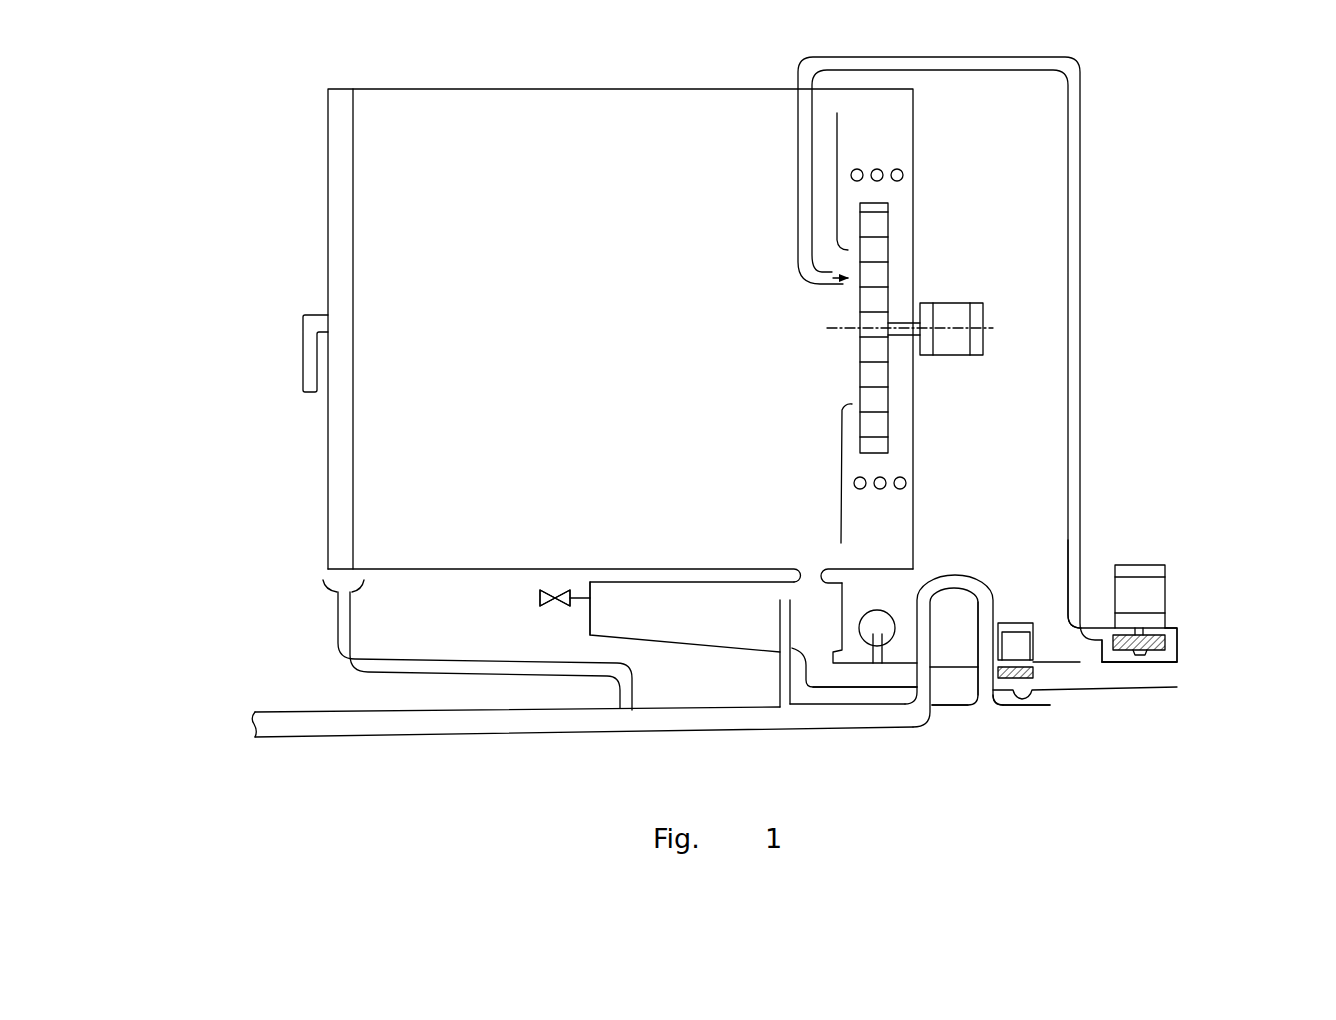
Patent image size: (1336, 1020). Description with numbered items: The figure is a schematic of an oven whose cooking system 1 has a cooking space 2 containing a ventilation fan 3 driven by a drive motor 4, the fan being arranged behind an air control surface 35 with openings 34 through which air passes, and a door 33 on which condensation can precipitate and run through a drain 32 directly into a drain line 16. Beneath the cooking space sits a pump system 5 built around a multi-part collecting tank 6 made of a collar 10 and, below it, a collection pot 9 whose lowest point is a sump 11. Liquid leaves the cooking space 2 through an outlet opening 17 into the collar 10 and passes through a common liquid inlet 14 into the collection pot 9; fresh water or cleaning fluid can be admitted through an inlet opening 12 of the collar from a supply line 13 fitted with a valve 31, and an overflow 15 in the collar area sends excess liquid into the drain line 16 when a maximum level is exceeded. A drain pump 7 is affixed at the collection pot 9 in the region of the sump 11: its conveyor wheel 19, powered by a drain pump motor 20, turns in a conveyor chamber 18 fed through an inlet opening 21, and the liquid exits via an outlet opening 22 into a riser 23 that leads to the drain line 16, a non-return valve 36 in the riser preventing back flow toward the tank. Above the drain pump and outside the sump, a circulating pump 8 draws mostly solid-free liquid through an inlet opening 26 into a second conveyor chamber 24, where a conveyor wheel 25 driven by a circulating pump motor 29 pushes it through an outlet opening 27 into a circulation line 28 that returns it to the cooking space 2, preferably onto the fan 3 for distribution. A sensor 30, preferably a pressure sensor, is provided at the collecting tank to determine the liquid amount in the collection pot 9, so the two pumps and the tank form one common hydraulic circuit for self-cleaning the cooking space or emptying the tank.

The cooking system 1 is at (230, 333).
The cooking space 2 is at (640, 272).
The ventilation fan 3 is at (866, 373).
The drive motor 4 is at (950, 303).
The pump system 5 is at (1252, 605).
The collecting tank 6 is at (826, 691).
The drain pump 7 is at (1014, 592).
The circulating pump 8 is at (1157, 505).
The collection pot 9 is at (1102, 690).
The collar 10 is at (722, 630).
The sump 11 is at (968, 708).
The inlet opening 12 is at (602, 596).
The supply line 13 is at (578, 605).
The liquid inlet 14 is at (815, 656).
The overflow 15 is at (768, 601).
The drain line 16 is at (542, 722).
The outlet opening 17 is at (810, 565).
The conveyor chamber 18 is at (1040, 692).
The conveyor wheel 19 is at (1038, 676).
The drain pump motor 20 is at (1017, 638).
The inlet opening 21 is at (1015, 710).
The outlet opening 22 is at (991, 722).
The riser 23 is at (978, 610).
The second conveyor chamber 24 is at (1177, 660).
The conveyor wheel 25 is at (1178, 642).
The inlet opening 26 is at (1140, 672).
The outlet opening 27 is at (1098, 620).
The circulation line 28 is at (1080, 268).
The circulating pump motor 29 is at (1155, 597).
The sensor 30 is at (878, 667).
The valve 31 is at (556, 586).
The drain 32 is at (342, 645).
The door 33 is at (340, 440).
The openings 34 is at (883, 158).
The air control surface 35 is at (837, 175).
The non-return valve 36 is at (968, 639).